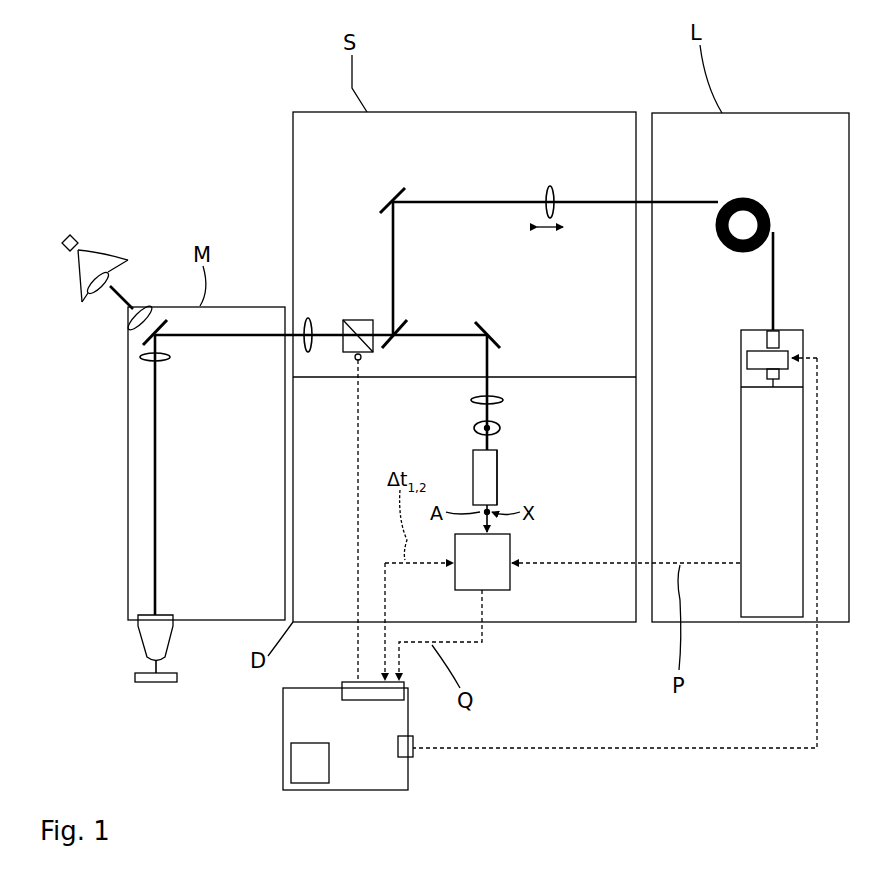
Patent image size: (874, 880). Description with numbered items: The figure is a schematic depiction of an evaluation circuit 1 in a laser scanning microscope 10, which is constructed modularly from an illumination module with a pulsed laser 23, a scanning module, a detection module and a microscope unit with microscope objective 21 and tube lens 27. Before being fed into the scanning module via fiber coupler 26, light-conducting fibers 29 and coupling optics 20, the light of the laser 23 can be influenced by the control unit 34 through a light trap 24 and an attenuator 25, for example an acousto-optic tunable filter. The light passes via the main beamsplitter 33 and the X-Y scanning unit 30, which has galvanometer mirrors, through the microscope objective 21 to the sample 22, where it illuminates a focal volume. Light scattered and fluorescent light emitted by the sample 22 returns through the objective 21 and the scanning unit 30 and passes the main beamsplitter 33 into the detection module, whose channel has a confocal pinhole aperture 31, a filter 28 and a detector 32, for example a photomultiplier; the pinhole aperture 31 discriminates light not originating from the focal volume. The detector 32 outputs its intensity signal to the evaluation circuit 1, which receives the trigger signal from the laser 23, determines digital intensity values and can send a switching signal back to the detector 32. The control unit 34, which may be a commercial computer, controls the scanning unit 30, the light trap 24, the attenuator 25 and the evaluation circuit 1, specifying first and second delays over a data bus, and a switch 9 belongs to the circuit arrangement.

The laser scanning microscope 10 is at (101, 79).
The coupling optics 20 is at (552, 185).
The microscope objective 21 is at (138, 636).
The sample 22 is at (140, 685).
The laser 23 is at (768, 565).
The light trap 24 is at (757, 371).
The attenuator 25 is at (757, 357).
The fiber coupler 26 is at (741, 333).
The tube lens 27 is at (132, 355).
The filter 28 is at (495, 442).
The light-conducting fibers 29 is at (680, 200).
The scanning unit 30 is at (357, 320).
The pinhole aperture 31 is at (500, 428).
The detector 32 is at (497, 485).
The main beamsplitter 33 is at (403, 322).
The control unit 34 is at (361, 759).
The switch 9 is at (283, 752).
The evaluation circuit 1 is at (503, 590).